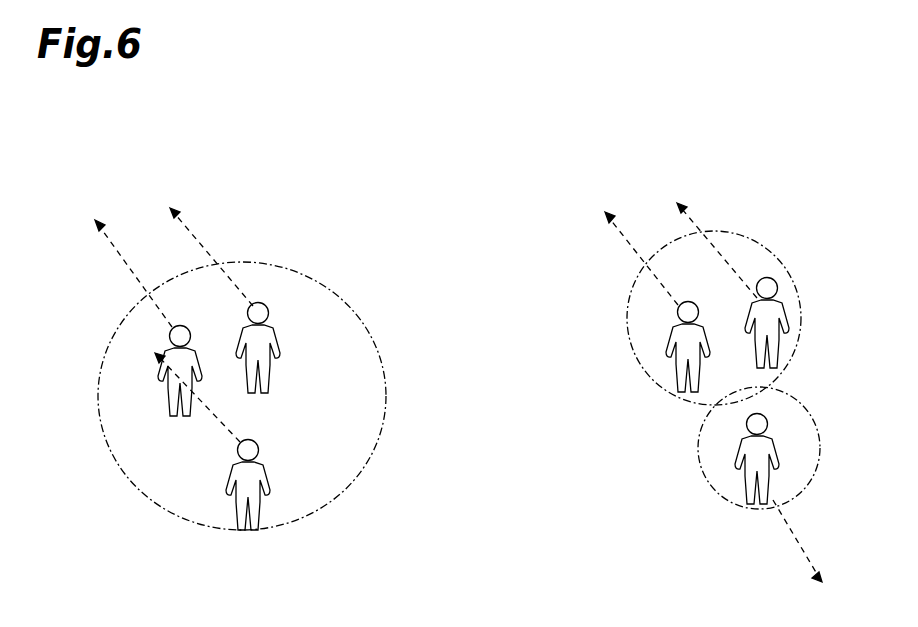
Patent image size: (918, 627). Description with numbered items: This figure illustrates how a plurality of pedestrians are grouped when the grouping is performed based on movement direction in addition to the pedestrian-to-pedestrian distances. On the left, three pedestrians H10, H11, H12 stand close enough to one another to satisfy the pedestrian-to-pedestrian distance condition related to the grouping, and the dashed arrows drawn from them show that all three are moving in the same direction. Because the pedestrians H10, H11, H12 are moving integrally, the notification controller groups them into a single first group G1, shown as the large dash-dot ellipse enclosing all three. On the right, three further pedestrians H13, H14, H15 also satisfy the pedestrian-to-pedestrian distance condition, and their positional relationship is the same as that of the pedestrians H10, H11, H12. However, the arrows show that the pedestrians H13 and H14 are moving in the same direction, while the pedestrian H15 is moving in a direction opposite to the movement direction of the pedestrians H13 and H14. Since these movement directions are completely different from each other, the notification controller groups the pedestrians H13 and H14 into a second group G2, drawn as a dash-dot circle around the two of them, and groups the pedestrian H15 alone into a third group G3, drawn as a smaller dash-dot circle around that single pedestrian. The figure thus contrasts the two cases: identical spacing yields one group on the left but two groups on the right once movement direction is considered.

The first group G1 is at (355, 311).
The second group G2 is at (806, 322).
The third group G3 is at (816, 423).
The pedestrian H10 is at (172, 392).
The pedestrian H11 is at (263, 302).
The pedestrian H12 is at (250, 440).
The pedestrian H13 is at (668, 345).
The pedestrian H14 is at (770, 282).
The pedestrian H15 is at (738, 458).